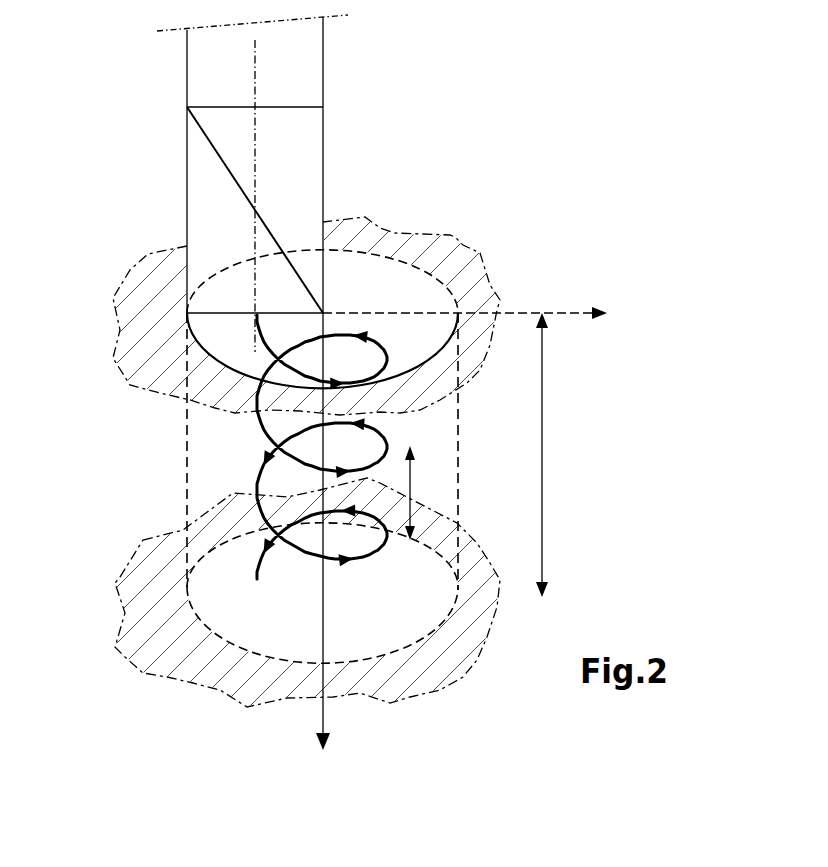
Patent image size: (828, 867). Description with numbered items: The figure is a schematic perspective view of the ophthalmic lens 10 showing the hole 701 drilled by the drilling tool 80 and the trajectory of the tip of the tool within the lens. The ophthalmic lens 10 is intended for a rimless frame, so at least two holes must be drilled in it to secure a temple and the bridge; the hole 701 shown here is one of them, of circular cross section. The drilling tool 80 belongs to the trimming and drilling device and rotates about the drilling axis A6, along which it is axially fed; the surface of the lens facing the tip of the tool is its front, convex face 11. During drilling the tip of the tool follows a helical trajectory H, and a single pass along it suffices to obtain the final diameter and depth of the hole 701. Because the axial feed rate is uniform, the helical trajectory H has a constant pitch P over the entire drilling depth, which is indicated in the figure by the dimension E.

The drilling tool 80 is at (187, 172).
The drilling axis A6 is at (255, 58).
The ophthalmic lens 10 is at (387, 242).
The front, convex face 11 is at (472, 255).
The hole 701 is at (187, 450).
The helical trajectory H is at (257, 505).
The pitch P is at (423, 512).
The hole depth / thickness E is at (542, 430).